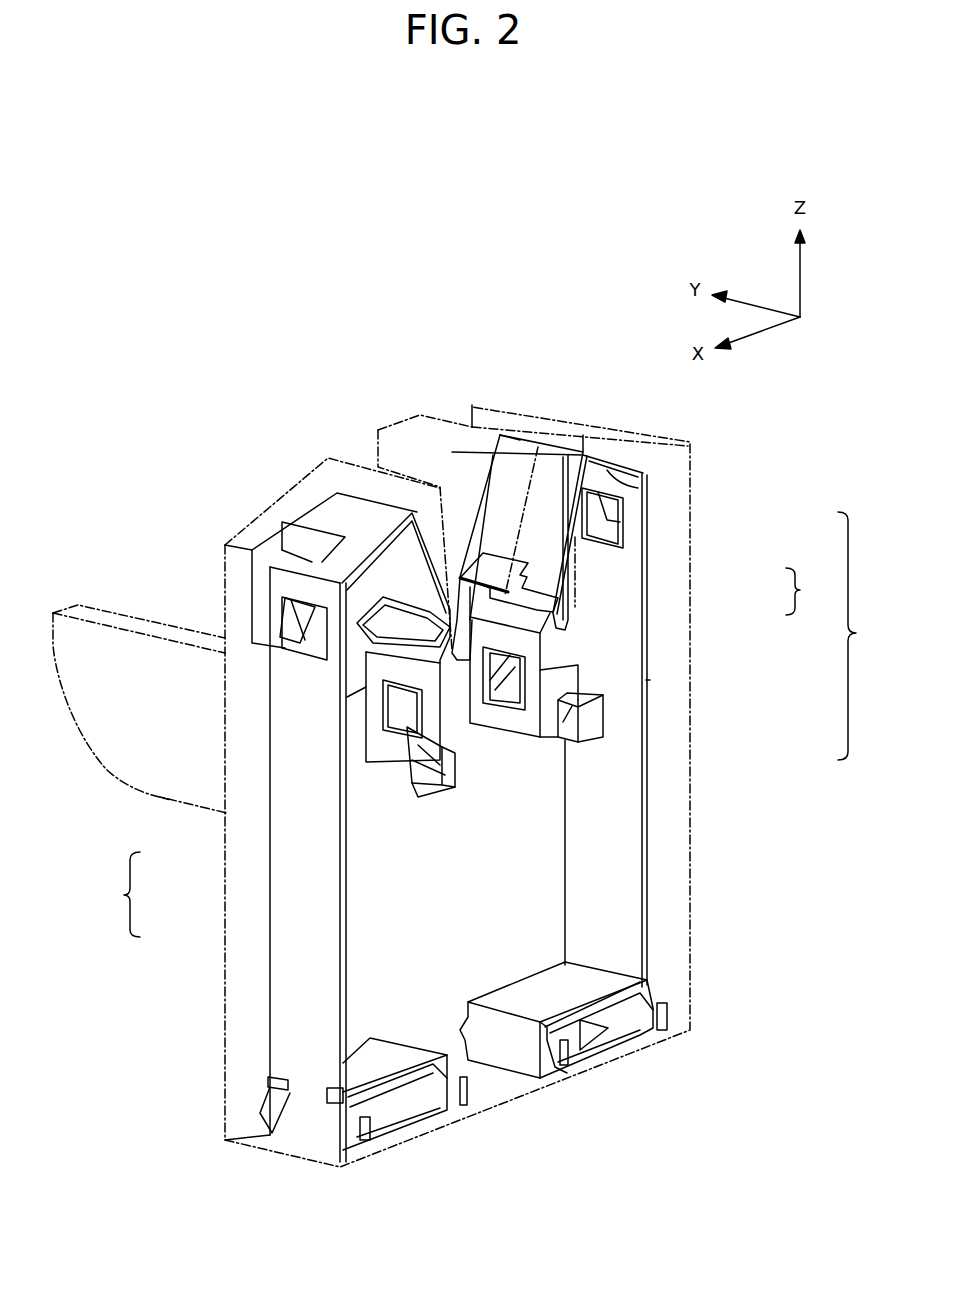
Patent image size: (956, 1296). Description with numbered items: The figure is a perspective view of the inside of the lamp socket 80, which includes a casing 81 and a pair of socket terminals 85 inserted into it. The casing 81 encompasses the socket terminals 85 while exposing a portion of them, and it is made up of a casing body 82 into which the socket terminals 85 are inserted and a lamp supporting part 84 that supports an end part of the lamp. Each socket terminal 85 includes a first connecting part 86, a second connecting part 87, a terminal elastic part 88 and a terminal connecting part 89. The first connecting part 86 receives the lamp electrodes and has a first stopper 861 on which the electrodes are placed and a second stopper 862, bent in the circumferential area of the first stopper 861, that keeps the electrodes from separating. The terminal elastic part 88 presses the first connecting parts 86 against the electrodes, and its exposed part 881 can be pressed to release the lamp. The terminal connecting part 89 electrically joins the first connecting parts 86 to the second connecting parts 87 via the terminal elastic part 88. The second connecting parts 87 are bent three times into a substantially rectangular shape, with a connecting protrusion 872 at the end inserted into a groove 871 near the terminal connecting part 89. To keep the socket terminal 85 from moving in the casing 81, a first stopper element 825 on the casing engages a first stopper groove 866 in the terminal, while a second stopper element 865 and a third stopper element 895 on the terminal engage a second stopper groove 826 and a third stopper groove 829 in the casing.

The lamp socket 80 is at (339, 293).
The casing 81 is at (117, 894).
The casing body 82 is at (225, 931).
The lamp supporting part 84 is at (162, 800).
The socket terminal 85 is at (859, 636).
The first connecting part 86 is at (808, 591).
The second connecting part 87 is at (573, 990).
The terminal elastic part 88 is at (598, 478).
The terminal connecting part 89 is at (646, 680).
The first stopper element 825 is at (387, 697).
The second stopper groove 826 is at (603, 745).
The third stopper groove 829 is at (288, 640).
The first stopper 861 is at (550, 623).
The second stopper 862 is at (508, 563).
The second stopper element 865 is at (567, 740).
The first stopper groove 866 is at (400, 770).
The groove 871 is at (288, 1083).
The connecting protrusion 872 is at (267, 1117).
The exposed part 881 is at (552, 478).
The third stopper element 895 is at (288, 612).